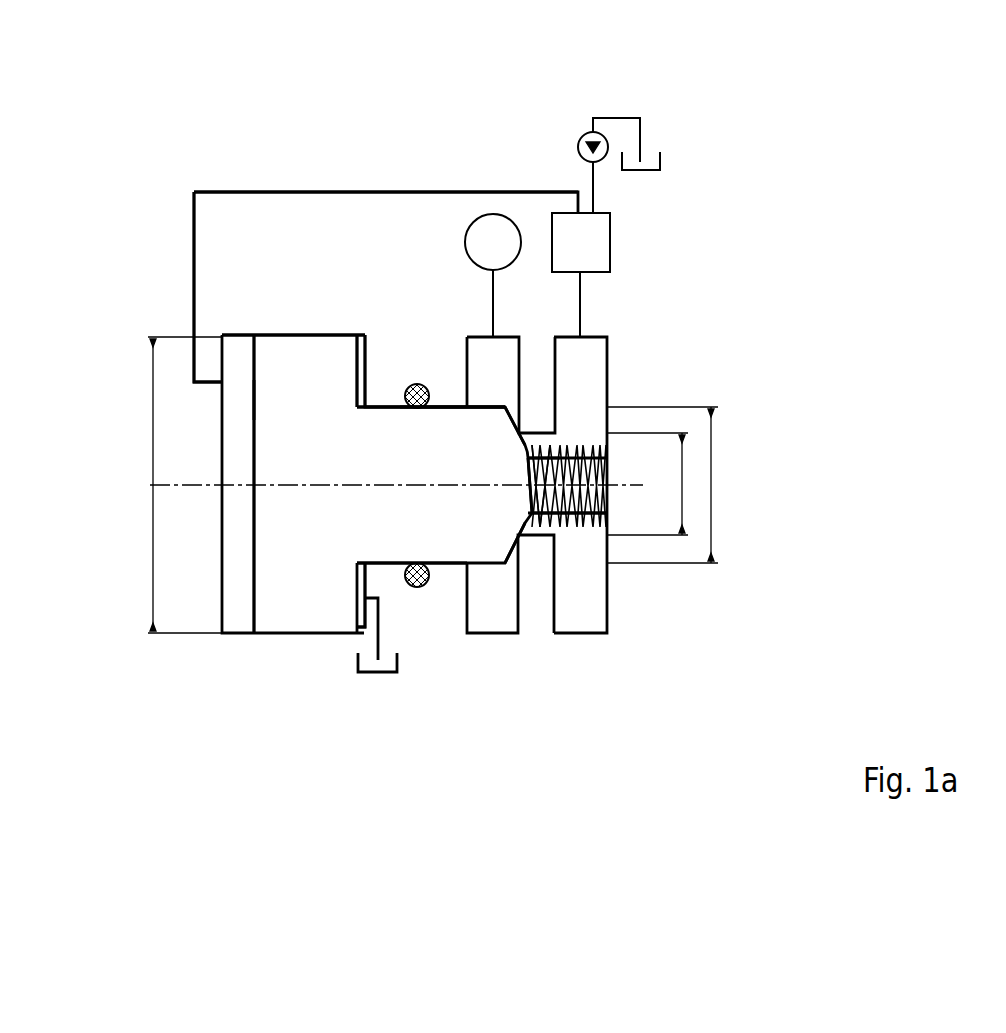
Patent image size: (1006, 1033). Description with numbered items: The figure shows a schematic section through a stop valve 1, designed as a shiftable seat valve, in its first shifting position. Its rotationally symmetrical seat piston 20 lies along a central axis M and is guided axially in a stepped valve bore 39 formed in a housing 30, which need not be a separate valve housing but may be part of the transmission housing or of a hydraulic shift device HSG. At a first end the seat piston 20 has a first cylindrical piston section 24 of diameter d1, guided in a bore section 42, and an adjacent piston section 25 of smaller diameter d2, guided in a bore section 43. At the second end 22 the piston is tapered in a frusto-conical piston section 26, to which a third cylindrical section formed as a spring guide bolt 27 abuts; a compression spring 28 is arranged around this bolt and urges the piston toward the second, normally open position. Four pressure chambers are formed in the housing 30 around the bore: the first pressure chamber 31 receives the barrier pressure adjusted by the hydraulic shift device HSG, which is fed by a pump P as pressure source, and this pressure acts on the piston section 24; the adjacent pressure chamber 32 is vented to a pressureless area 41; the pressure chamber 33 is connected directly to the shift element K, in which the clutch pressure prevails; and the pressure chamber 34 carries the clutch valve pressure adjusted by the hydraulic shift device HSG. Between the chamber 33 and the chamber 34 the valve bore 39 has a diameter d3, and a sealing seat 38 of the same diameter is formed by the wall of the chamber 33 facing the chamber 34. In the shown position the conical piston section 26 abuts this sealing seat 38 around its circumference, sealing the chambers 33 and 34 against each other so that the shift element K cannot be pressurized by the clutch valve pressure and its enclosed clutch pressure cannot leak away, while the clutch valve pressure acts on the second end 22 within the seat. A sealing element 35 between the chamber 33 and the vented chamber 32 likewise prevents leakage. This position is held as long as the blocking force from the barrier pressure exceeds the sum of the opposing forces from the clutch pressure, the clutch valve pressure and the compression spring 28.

The stop valve 1 is at (155, 218).
The seat piston 20 is at (320, 636).
The second end 22 is at (607, 418).
The piston section 24 is at (345, 615).
The piston section 25 is at (385, 547).
The piston section 26 is at (520, 537).
The spring guide bolt 27 is at (628, 487).
The compression spring 28 is at (565, 522).
The housing 30 is at (317, 323).
The pressure chamber 31 is at (237, 615).
The pressure chamber 32 is at (370, 360).
The pressure chamber 33 is at (477, 615).
The pressure chamber 34 is at (582, 607).
The sealing element 35 is at (417, 380).
The sealing seat 38 is at (525, 537).
The valve bore 39 is at (451, 402).
The ventilation; pressureless area 41 is at (390, 673).
The bore section 42 is at (287, 337).
The bore section 43 is at (380, 407).
The central axis M is at (610, 413).
The pump P is at (584, 137).
The shift element, clutch K is at (493, 275).
The hydraulic shift device HSG is at (581, 275).
The diameter d1 is at (175, 485).
The diameter d2 is at (662, 485).
The diameter d3 is at (647, 484).